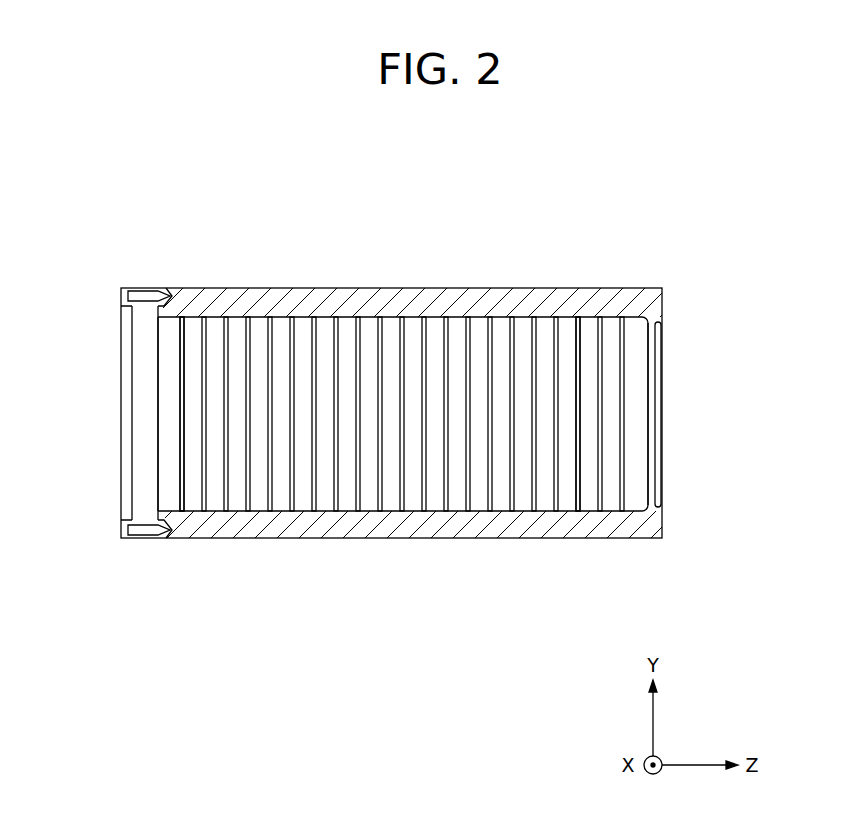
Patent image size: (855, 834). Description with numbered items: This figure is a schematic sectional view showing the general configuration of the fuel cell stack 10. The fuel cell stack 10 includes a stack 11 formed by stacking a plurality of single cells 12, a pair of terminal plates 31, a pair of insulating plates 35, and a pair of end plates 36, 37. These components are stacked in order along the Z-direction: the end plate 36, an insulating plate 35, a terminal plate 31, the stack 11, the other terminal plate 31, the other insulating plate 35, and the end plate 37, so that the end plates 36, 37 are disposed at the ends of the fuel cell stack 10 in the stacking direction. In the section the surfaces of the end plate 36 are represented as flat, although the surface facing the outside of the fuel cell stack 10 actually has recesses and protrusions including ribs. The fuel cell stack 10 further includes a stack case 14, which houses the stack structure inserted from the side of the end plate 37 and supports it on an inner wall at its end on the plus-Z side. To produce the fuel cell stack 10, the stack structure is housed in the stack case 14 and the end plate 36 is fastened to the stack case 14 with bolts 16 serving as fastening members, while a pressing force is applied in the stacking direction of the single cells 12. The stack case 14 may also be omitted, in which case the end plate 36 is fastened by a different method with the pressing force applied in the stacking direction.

The fuel cell stack 10 is at (545, 215).
The stack 11 is at (578, 595).
The single cells 12 is at (325, 497).
The stack case 14 is at (293, 288).
The bolts 16 is at (121, 295).
The terminal plates 31 is at (193, 495).
The insulating plates 35 is at (169, 494).
The end plate 36 is at (145, 497).
The end plate 37 is at (636, 470).